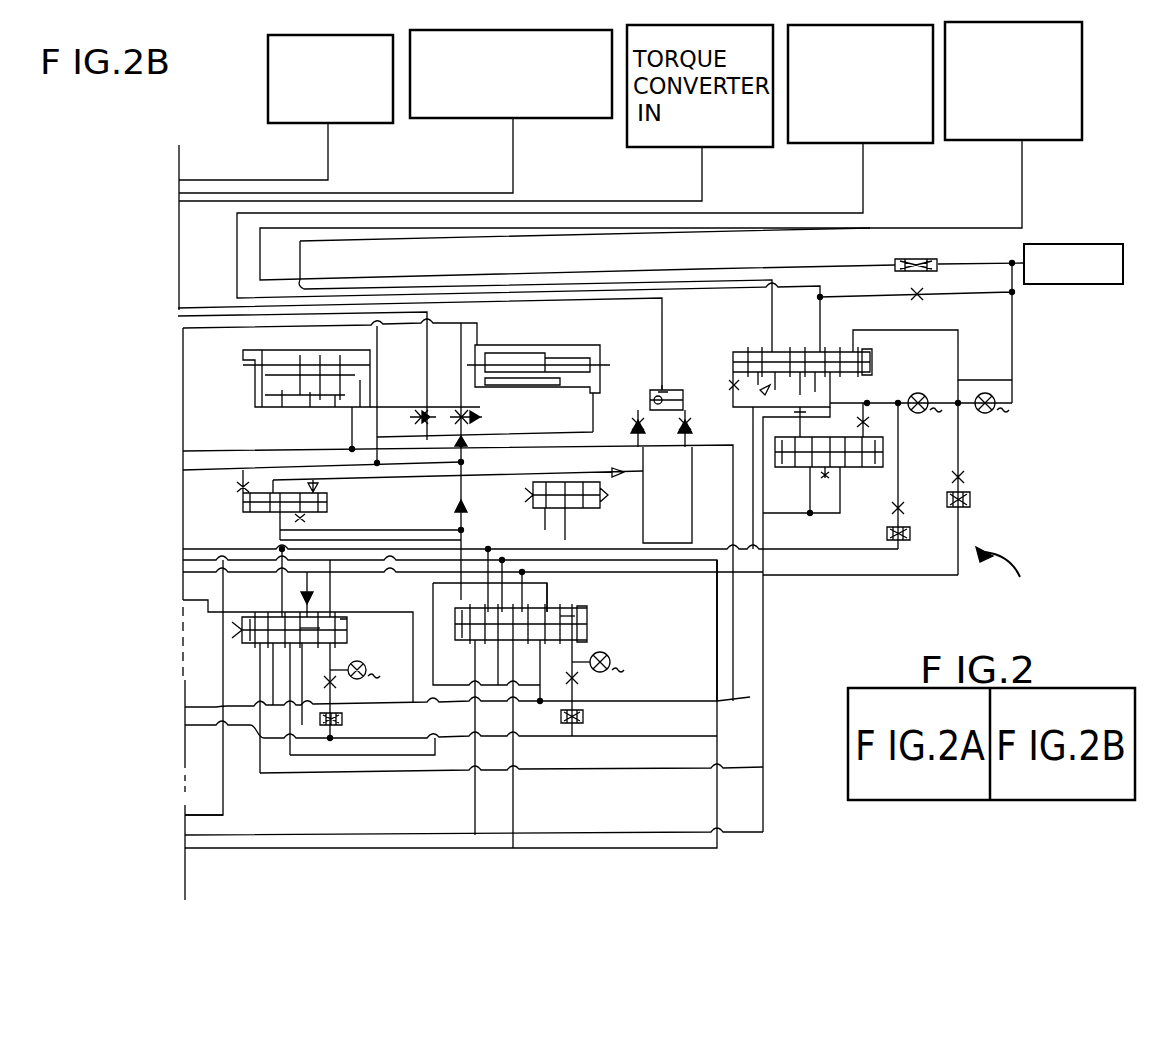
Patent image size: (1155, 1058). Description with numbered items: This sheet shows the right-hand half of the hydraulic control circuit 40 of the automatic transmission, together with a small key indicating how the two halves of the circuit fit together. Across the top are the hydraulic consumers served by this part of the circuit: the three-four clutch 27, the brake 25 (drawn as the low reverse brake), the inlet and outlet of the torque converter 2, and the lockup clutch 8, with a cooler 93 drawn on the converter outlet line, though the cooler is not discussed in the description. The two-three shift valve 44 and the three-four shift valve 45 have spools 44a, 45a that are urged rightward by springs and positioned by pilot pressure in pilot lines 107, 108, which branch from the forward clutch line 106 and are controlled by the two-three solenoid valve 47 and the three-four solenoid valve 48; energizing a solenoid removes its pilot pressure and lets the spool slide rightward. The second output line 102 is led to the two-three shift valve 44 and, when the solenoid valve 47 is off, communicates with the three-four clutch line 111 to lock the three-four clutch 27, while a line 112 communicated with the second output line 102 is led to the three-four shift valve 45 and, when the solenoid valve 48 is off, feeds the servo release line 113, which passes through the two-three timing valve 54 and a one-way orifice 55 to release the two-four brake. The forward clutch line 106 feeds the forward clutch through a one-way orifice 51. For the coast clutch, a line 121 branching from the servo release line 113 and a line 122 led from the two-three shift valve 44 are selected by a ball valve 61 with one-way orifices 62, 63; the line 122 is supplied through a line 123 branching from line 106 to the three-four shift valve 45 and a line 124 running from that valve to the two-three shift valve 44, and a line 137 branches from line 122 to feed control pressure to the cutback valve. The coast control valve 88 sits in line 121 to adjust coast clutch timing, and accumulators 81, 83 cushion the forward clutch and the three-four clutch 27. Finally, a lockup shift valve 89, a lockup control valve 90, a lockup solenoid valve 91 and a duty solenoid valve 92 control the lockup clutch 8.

The torque converter 2 is at (820, 143).
The lockup clutch 8 is at (985, 140).
The brake 25 is at (443, 118).
The 3-4 clutch 27 is at (362, 123).
The hydraulic control circuit 40 is at (1010, 576).
The 2-3 shift valve 44 is at (363, 627).
The spool 44a is at (322, 616).
The 3-4 shift valve 45 is at (606, 622).
The spool 45a is at (568, 612).
The 2-3 solenoid valve 47 is at (352, 679).
The 3-4 solenoid valve 48 is at (612, 672).
The one-way orifice 51 is at (416, 414).
The 2-3 timing valve 54 is at (330, 500).
The one-way orifice 55 is at (482, 413).
The ball valve 61 is at (684, 392).
The one-way orifice 62 is at (637, 415).
The one-way orifice 63 is at (681, 445).
The accumulator 81 is at (244, 368).
The accumulator 83 is at (563, 351).
The coast control valve 88 is at (598, 505).
The lockup shift valve 89 is at (886, 358).
The lockup control valve 90 is at (853, 470).
The lockup solenoid valve 91 is at (986, 413).
The duty solenoid valve 92 is at (918, 413).
The cooler 93 is at (1092, 244).
The second output line 102 is at (313, 735).
The forward clutch line 106 is at (430, 313).
The pilot line 107 is at (338, 658).
The pilot line 108 is at (580, 647).
The 3-4 clutch line 111 is at (227, 468).
The line 112 is at (717, 572).
The servo release line 113 is at (461, 493).
The line 121 is at (475, 530).
The line 122 is at (688, 497).
The line 123 is at (580, 688).
The line 124 is at (405, 757).
The line 137 is at (223, 792).